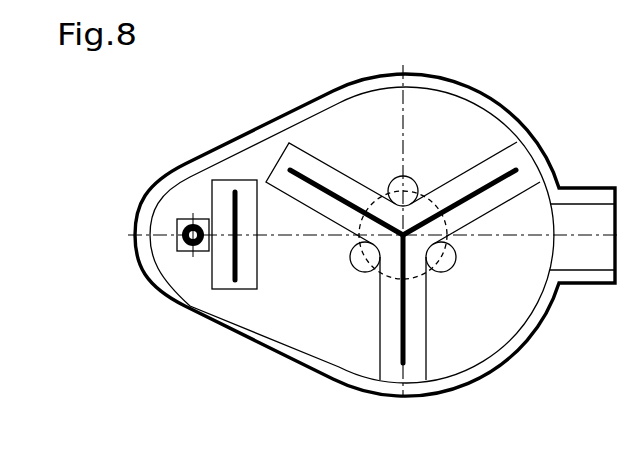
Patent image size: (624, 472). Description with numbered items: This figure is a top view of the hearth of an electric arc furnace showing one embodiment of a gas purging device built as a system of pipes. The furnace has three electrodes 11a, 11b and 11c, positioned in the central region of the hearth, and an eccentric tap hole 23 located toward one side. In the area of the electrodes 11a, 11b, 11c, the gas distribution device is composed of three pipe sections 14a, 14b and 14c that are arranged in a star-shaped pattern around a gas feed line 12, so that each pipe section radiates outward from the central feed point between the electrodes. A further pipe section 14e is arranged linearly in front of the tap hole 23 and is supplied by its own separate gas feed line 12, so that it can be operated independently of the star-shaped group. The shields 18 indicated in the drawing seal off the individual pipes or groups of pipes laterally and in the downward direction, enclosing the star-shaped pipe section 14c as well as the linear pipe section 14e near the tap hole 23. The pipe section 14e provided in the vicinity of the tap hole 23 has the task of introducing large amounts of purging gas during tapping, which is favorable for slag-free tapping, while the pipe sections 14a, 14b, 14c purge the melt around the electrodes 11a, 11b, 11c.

The electrode 11a is at (446, 263).
The electrode 11b is at (361, 263).
The electrode 11c is at (408, 187).
The gas feed line 12 is at (235, 238).
The pipe section 14a is at (520, 168).
The pipe section 14b is at (407, 333).
The pipe section 14c is at (332, 194).
The pipe section 14e is at (233, 197).
The shield 18 is at (237, 180).
The tap hole 23 is at (185, 248).